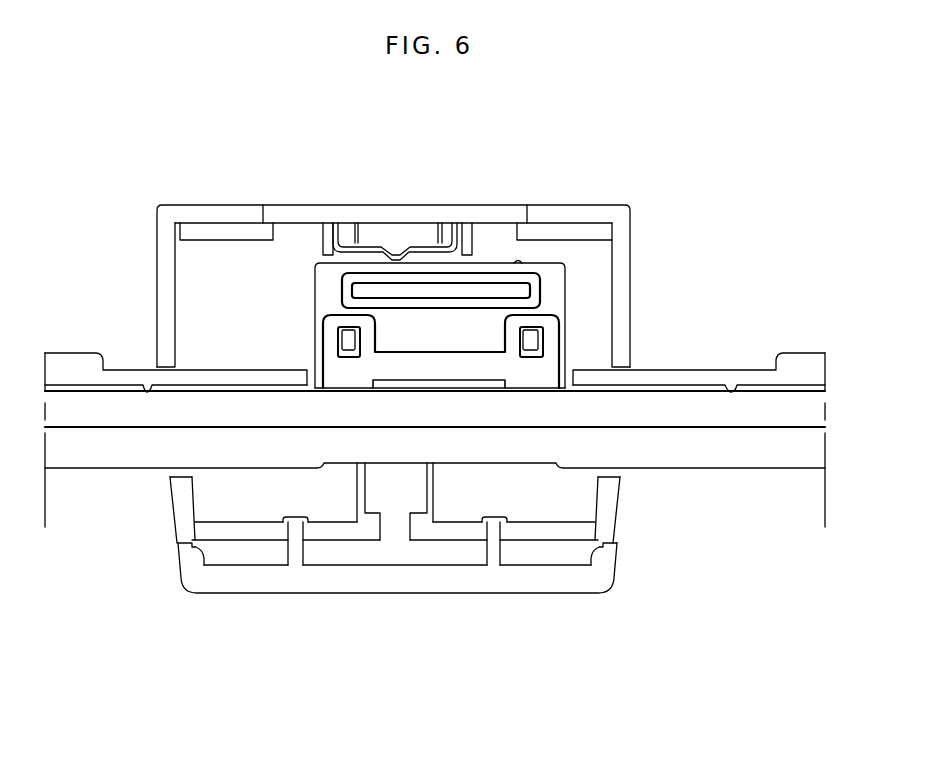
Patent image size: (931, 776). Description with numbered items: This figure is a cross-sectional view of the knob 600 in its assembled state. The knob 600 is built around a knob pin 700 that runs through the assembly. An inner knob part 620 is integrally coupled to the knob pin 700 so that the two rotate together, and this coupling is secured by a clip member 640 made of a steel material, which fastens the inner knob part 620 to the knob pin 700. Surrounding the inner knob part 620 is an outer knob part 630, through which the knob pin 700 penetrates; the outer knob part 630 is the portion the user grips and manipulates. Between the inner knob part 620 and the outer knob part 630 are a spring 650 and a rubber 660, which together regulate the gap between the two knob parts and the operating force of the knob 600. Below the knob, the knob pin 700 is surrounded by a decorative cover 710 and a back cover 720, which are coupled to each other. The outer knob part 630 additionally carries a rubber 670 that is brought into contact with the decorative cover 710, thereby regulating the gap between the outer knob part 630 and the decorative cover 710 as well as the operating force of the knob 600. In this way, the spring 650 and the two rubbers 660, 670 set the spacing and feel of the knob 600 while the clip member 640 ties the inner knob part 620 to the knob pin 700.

The knob 600 is at (475, 198).
The inner knob part 620 is at (462, 330).
The outer knob part 630 is at (557, 208).
The clip member 640 is at (337, 362).
The spring 650 is at (372, 243).
The rubber 660 is at (345, 290).
The rubber 670 is at (402, 485).
The knob pin 700 is at (100, 412).
The decorative cover 710 is at (735, 458).
The back cover 720 is at (747, 378).